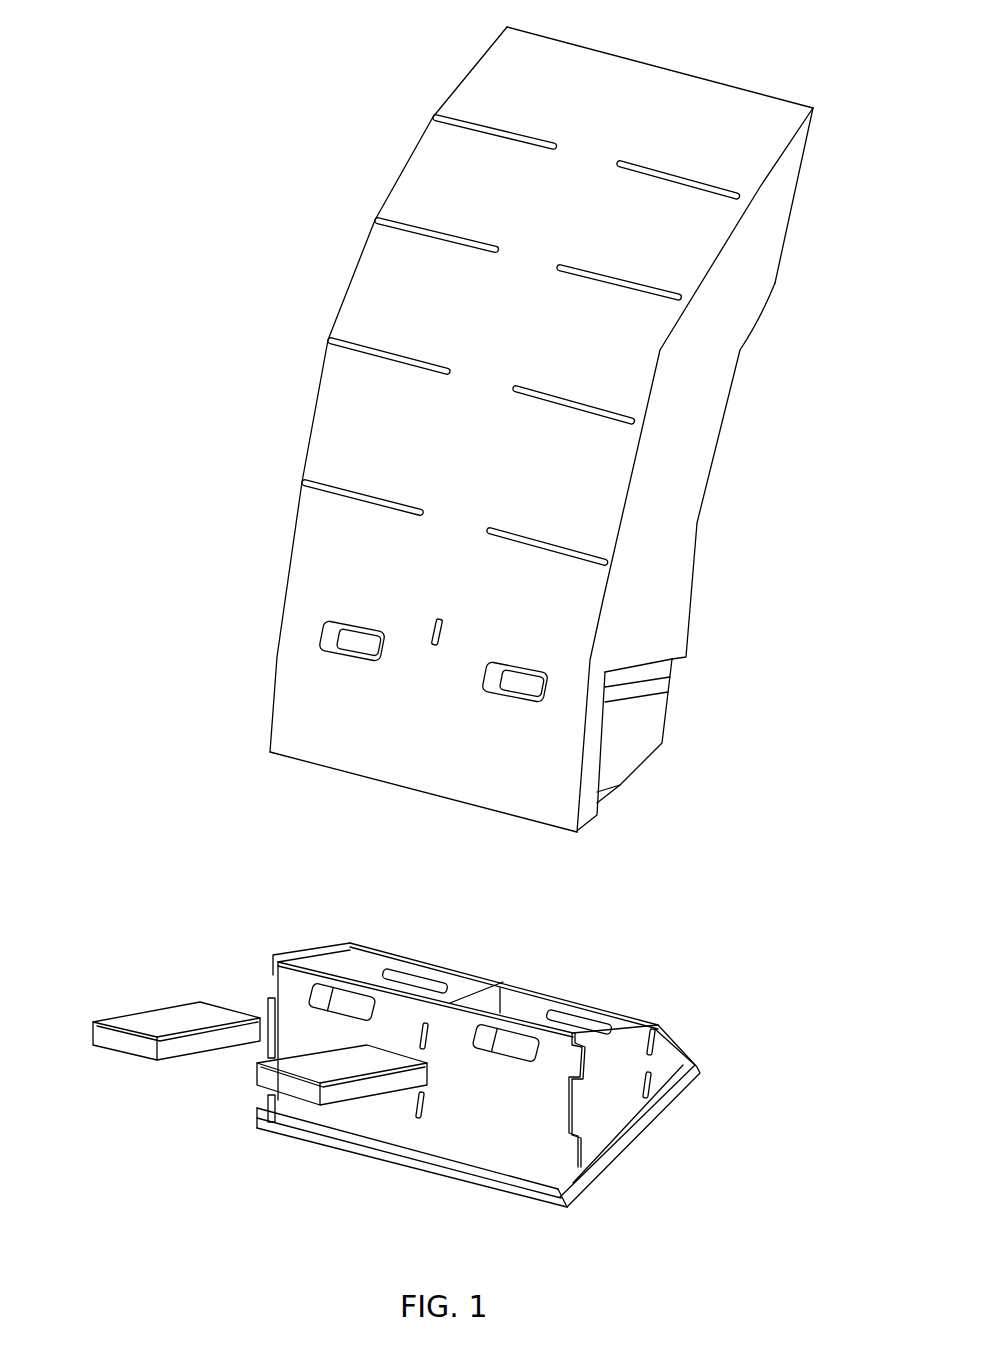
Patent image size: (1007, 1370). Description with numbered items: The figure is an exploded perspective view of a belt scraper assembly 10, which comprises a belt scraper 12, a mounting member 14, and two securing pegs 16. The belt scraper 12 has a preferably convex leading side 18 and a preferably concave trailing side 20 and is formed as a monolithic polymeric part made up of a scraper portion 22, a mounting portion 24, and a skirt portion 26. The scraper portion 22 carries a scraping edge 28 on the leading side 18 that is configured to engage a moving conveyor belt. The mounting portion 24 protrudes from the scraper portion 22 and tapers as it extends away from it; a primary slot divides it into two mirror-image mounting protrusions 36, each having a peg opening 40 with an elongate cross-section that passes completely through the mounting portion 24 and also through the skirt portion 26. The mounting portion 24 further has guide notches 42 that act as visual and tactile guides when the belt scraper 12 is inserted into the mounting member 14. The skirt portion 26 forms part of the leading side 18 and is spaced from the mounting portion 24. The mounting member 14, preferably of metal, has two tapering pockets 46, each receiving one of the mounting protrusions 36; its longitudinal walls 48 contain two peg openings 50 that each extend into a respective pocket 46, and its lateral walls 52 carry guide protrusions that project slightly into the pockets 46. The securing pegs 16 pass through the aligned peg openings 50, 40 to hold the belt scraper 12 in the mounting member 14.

The belt scraper assembly 10 is at (272, 100).
The belt scraper 12 is at (693, 430).
The mounting member 14 is at (473, 1140).
The securing pegs 16 is at (135, 1048).
The leading side 18 is at (375, 288).
The trailing side 20 is at (697, 525).
The scraper portion 22 is at (740, 315).
The mounting portion 24 is at (647, 732).
The skirt portion 26 is at (325, 752).
The scraping edge 28 is at (636, 58).
The mounting protrusions 36 is at (672, 744).
The peg openings 40 is at (355, 635).
The guide notches 42 is at (652, 688).
The pockets 46 is at (363, 967).
The longitudinal walls 48 is at (588, 1017).
The peg openings 50 is at (327, 1000).
The lateral walls 52 is at (322, 950).